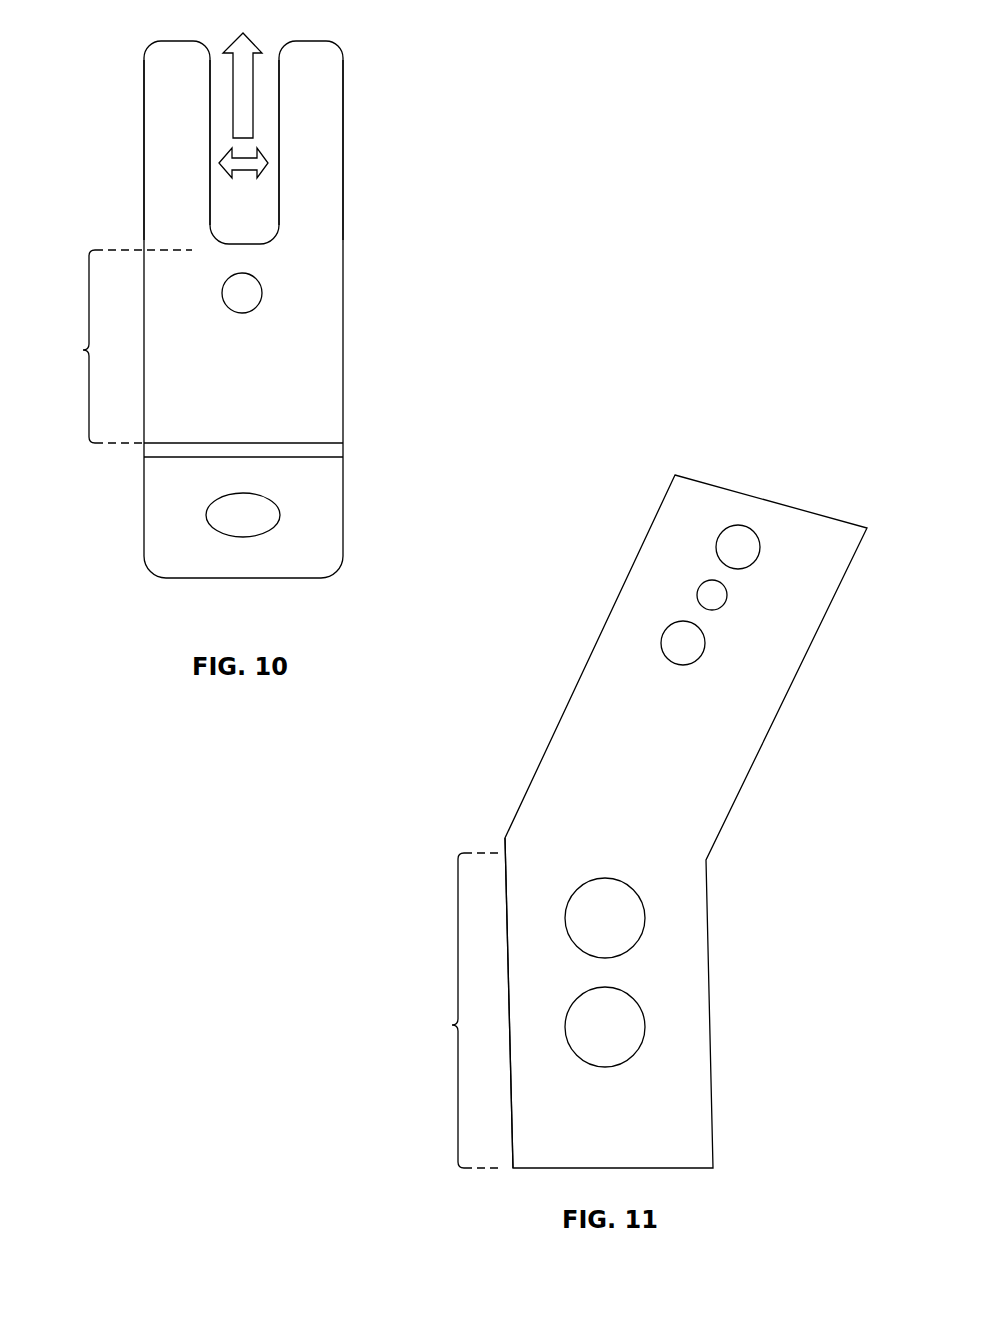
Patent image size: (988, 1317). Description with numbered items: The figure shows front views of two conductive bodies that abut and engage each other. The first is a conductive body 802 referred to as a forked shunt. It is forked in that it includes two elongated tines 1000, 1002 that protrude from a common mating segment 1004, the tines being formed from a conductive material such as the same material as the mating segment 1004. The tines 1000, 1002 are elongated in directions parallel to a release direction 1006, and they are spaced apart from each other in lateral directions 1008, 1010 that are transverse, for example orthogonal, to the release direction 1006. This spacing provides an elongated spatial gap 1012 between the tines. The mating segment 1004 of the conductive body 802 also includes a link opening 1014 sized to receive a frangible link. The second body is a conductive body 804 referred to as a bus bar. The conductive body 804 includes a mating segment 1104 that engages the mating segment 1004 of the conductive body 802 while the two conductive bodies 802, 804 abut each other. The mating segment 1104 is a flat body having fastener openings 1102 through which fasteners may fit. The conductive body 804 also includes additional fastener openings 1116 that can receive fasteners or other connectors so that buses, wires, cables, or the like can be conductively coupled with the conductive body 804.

In FIG. 10, the conductive body 802 is at (106, 36).
In FIG. 10, the elongated tine 1000 is at (155, 135).
In FIG. 10, the elongated tine 1002 is at (325, 143).
In FIG. 10, the mating segment 1004 is at (103, 346).
In FIG. 10, the release direction 1006 is at (243, 75).
In FIG. 10, the lateral direction 1008 is at (218, 163).
In FIG. 10, the lateral direction 1010 is at (268, 163).
In FIG. 10, the spatial gap 1012 is at (275, 213).
In FIG. 10, the link opening 1014 is at (242, 298).
In FIG. 11, the conductive body 804 is at (589, 608).
In FIG. 11, the additional fastener openings 1116 is at (683, 643).
In FIG. 11, the fastener openings 1102 is at (607, 1027).
In FIG. 11, the mating segment 1104 is at (449, 1003).